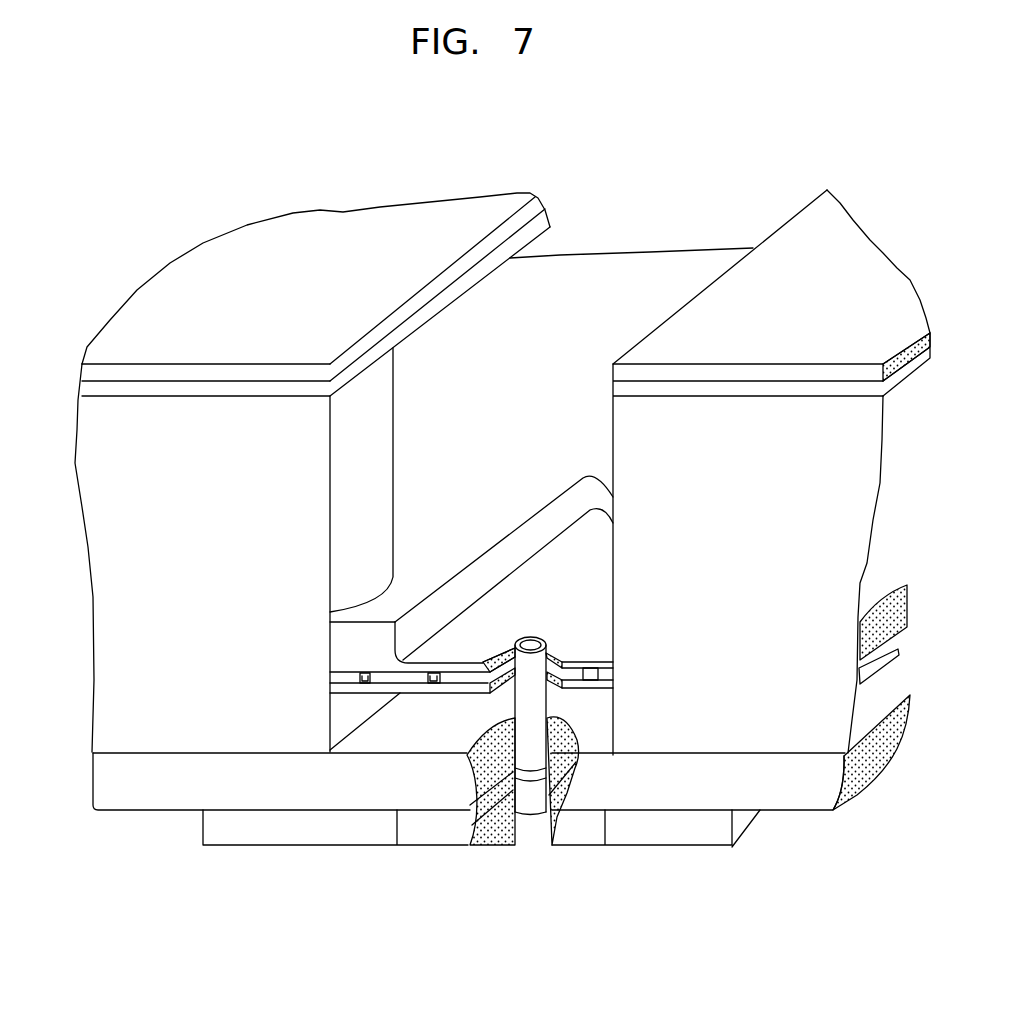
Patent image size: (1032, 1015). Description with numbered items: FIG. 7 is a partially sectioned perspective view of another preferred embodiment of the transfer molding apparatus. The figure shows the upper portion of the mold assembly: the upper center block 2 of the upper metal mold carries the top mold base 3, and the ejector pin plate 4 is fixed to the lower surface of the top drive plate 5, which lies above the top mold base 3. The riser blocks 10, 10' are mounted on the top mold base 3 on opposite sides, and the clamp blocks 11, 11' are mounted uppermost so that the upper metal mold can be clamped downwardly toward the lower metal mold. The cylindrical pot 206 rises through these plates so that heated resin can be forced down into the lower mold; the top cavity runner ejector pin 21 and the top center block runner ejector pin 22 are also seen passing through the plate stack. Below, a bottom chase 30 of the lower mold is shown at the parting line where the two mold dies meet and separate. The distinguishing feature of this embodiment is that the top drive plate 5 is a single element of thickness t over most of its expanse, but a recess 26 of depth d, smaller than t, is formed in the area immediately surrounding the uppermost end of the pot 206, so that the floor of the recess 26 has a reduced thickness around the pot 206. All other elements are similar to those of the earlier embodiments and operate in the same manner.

The upper center block 2 is at (581, 838).
The top mold base 3 is at (470, 777).
The ejector pin plate 4 is at (389, 694).
The top drive plate 5 is at (324, 649).
The riser block 10 is at (773, 587).
The riser block 10' is at (217, 550).
The clamp block 11 is at (724, 293).
The clamp block 11' is at (316, 294).
The top cavity runner ejector pin 21 is at (363, 677).
The top center block runner ejector pin 22 is at (437, 675).
The recess 26 is at (516, 575).
The bottom chase 30 is at (203, 828).
The pot 206 is at (542, 638).